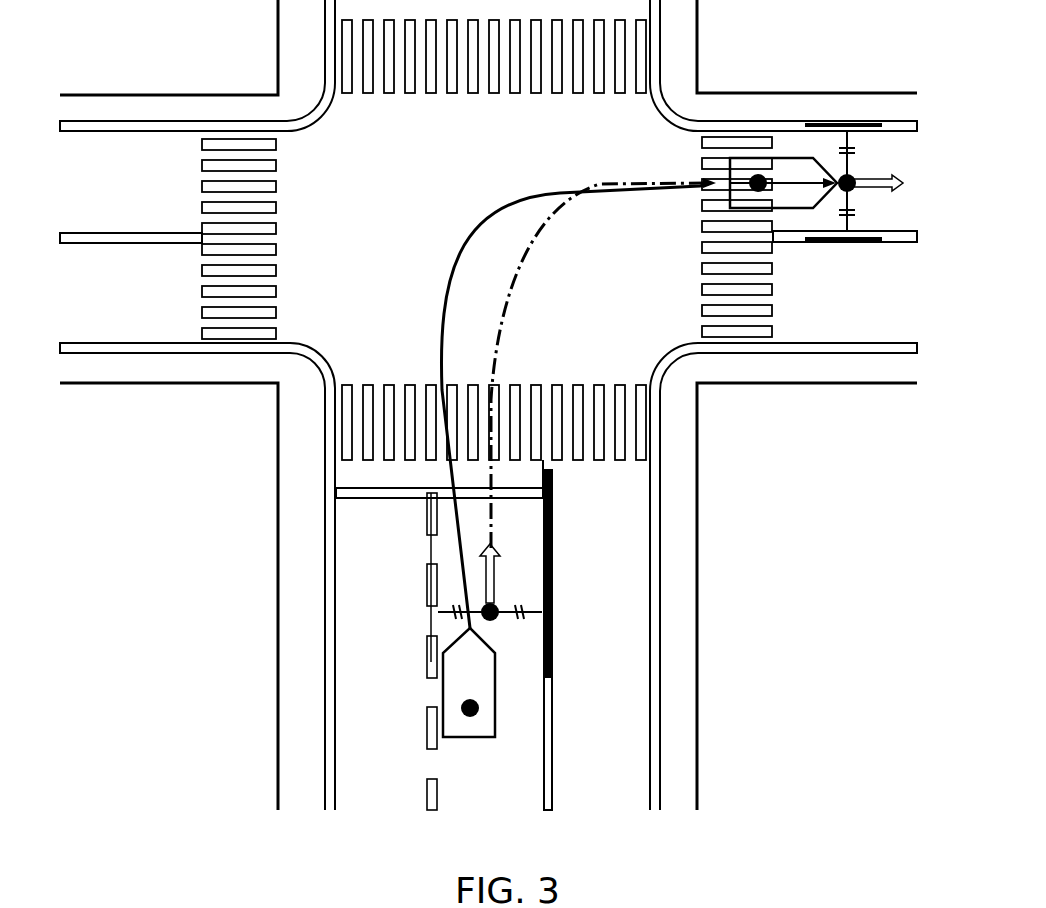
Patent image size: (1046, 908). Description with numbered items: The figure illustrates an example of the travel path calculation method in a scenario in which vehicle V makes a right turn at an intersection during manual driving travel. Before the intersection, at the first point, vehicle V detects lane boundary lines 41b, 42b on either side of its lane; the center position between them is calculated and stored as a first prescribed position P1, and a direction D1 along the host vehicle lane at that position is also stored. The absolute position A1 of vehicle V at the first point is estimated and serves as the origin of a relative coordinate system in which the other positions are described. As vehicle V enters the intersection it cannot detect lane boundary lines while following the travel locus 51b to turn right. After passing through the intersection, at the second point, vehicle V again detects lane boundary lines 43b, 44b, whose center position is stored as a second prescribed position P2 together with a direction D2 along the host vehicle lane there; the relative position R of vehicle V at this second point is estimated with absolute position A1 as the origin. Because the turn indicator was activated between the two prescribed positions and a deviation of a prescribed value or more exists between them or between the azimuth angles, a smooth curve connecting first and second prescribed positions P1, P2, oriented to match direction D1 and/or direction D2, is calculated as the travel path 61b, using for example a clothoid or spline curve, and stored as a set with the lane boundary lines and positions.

The lane boundary line 41b is at (431, 545).
The lane boundary line 42b is at (549, 548).
The lane boundary line 43b is at (842, 122).
The lane boundary line 44b is at (835, 243).
The travel locus 51b is at (446, 313).
The travel path 61b is at (508, 320).
The vehicle V is at (443, 693).
The relative position R is at (757, 174).
The first prescribed position P1 is at (495, 620).
The second prescribed position P2 is at (852, 190).
The direction D1 is at (497, 583).
The direction D2 is at (890, 177).
The absolute position A1 is at (470, 717).